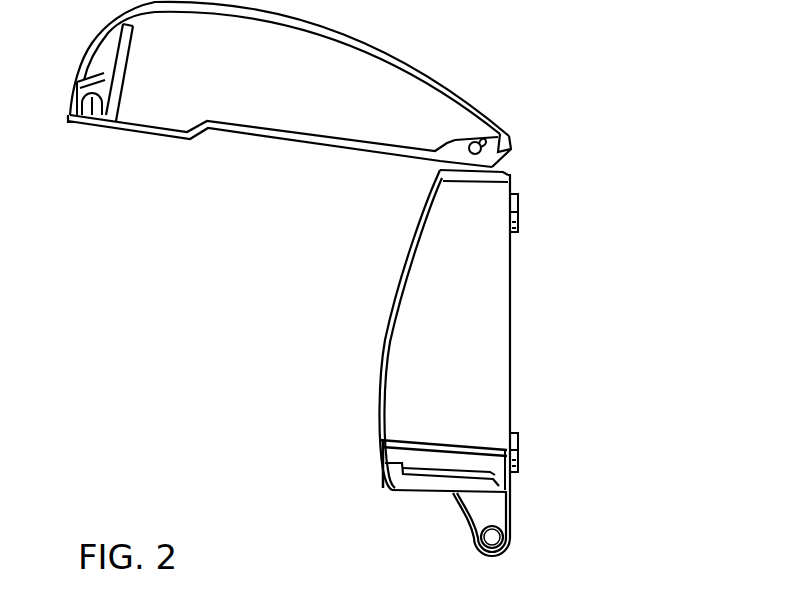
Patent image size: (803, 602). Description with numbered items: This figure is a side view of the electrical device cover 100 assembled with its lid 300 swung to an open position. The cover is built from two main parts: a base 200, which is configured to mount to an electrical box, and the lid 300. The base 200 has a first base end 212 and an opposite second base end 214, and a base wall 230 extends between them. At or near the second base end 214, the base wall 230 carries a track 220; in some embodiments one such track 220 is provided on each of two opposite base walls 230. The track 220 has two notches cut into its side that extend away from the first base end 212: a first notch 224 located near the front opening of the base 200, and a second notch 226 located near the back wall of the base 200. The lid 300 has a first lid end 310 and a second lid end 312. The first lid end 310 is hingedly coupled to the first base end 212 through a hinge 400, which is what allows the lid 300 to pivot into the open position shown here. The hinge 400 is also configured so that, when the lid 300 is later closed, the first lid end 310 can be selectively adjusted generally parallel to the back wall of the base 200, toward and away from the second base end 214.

The electrical device cover 100 is at (135, 308).
The base 200 is at (510, 378).
The first base end 212 is at (470, 210).
The second base end 214 is at (430, 410).
The track 220 is at (432, 478).
The first notch 224 is at (390, 494).
The second notch 226 is at (517, 493).
The base wall 230 is at (460, 323).
The lid 300 is at (400, 65).
The first lid end 310 is at (417, 115).
The second lid end 312 is at (202, 85).
The hinge 400 is at (530, 142).